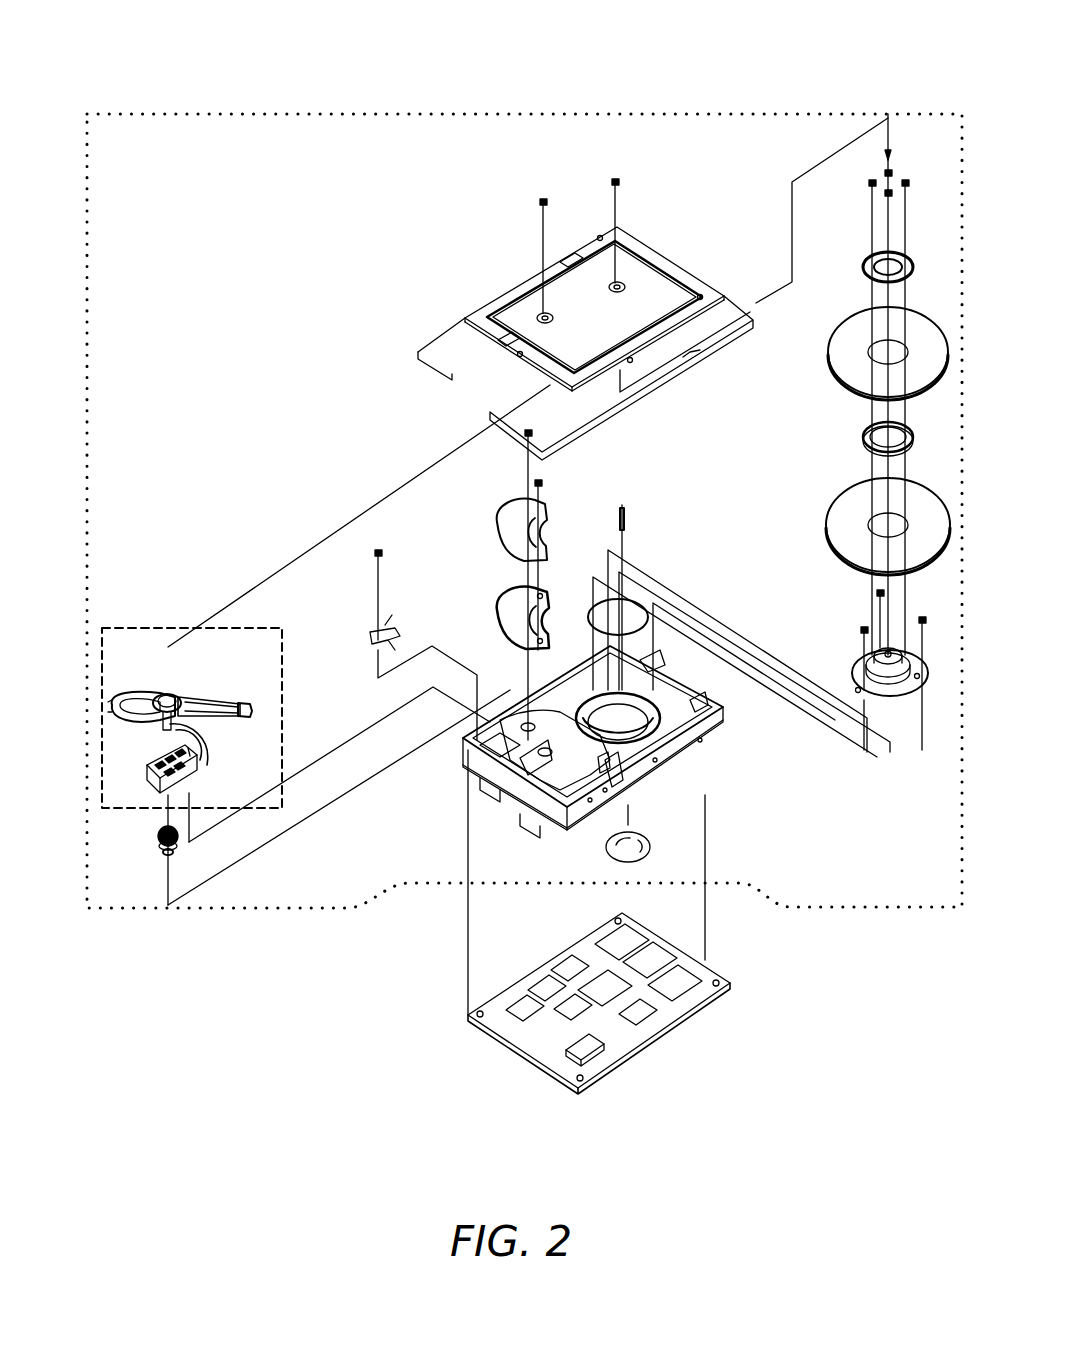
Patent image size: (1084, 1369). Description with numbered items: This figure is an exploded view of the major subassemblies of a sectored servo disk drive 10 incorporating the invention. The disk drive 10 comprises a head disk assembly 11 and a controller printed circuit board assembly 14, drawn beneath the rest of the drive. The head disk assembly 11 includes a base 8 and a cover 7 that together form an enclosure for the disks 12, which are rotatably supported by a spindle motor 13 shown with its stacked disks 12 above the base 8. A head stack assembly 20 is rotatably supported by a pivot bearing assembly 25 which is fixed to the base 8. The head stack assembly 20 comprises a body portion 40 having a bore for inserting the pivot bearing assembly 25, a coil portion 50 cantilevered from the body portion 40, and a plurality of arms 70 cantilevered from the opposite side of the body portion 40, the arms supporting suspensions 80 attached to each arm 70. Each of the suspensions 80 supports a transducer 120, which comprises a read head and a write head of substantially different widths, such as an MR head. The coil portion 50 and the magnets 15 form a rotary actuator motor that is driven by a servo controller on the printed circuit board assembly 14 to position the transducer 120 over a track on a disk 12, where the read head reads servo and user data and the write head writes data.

The sectored servo disk drive 10 is at (345, 84).
The cover 7 is at (478, 312).
The base 8 is at (713, 737).
The head disk assembly 11 is at (812, 907).
The disks 12 is at (833, 383).
The spindle motor 13 is at (843, 662).
The controller printed circuit board assembly 14 is at (648, 1042).
The magnets 15 is at (497, 605).
The head stack assembly 20 is at (137, 628).
The pivot bearing assembly 25 is at (158, 843).
The body portion 40 is at (167, 694).
The coil portion 50 is at (156, 724).
The arms 70 is at (200, 695).
The suspensions 80 is at (233, 720).
The transducer 120 is at (242, 697).